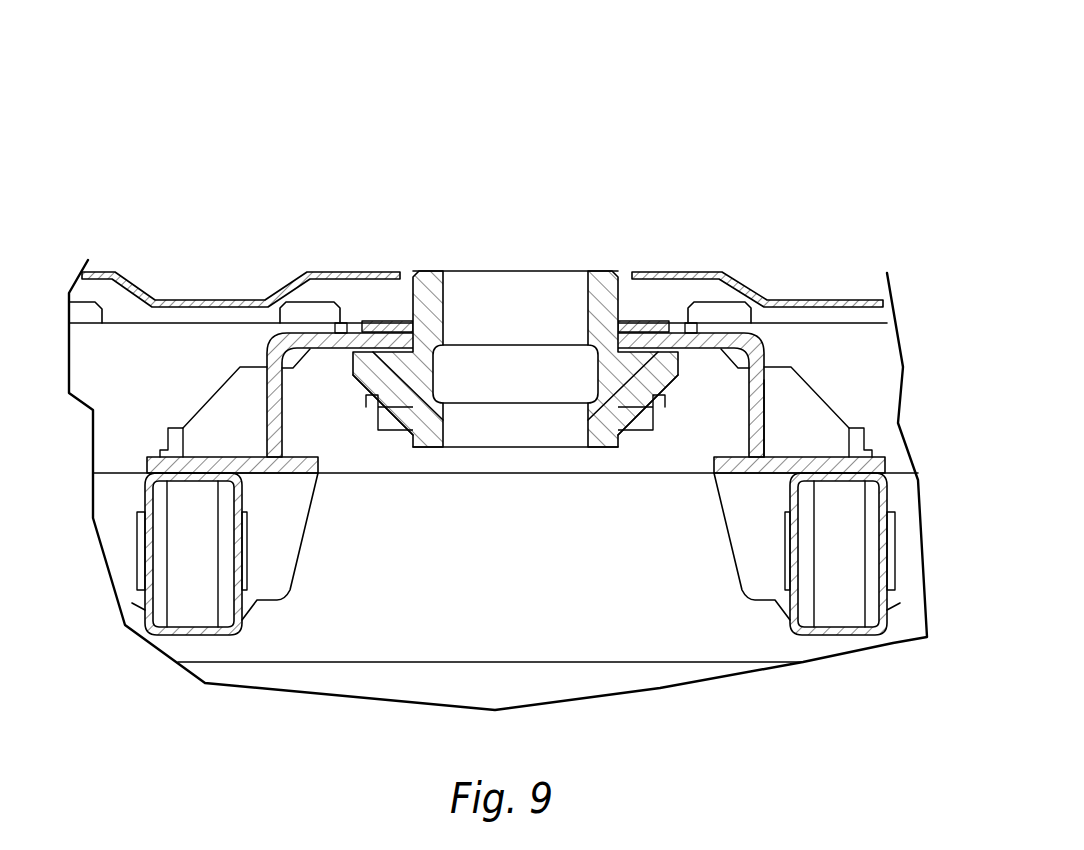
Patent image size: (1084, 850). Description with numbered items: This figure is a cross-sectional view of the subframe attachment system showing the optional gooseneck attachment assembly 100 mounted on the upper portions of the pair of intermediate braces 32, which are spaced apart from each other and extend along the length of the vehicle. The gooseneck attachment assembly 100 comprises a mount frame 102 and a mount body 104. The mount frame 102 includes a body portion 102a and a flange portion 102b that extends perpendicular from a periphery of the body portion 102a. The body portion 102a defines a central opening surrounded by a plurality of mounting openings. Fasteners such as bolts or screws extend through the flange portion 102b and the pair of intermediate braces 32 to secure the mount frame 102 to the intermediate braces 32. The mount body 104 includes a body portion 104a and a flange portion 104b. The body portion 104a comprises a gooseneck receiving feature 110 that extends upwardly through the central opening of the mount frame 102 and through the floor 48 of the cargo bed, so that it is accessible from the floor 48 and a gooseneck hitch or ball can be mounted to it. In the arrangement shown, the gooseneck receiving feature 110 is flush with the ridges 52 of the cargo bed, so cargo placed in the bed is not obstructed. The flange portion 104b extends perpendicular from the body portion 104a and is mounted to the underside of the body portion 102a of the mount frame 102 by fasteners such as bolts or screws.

The gooseneck attachment assembly 100 is at (478, 158).
The floor 48 is at (267, 262).
The ridges 52 is at (692, 272).
The mount frame 102 is at (767, 390).
The body portion 102a is at (764, 427).
The flange portion 102b is at (207, 457).
The mount body 104 is at (372, 402).
The body portion 104a is at (428, 282).
The flange portion 104b is at (383, 372).
The gooseneck receiving feature 110 is at (603, 280).
The intermediate braces 32 is at (160, 538).